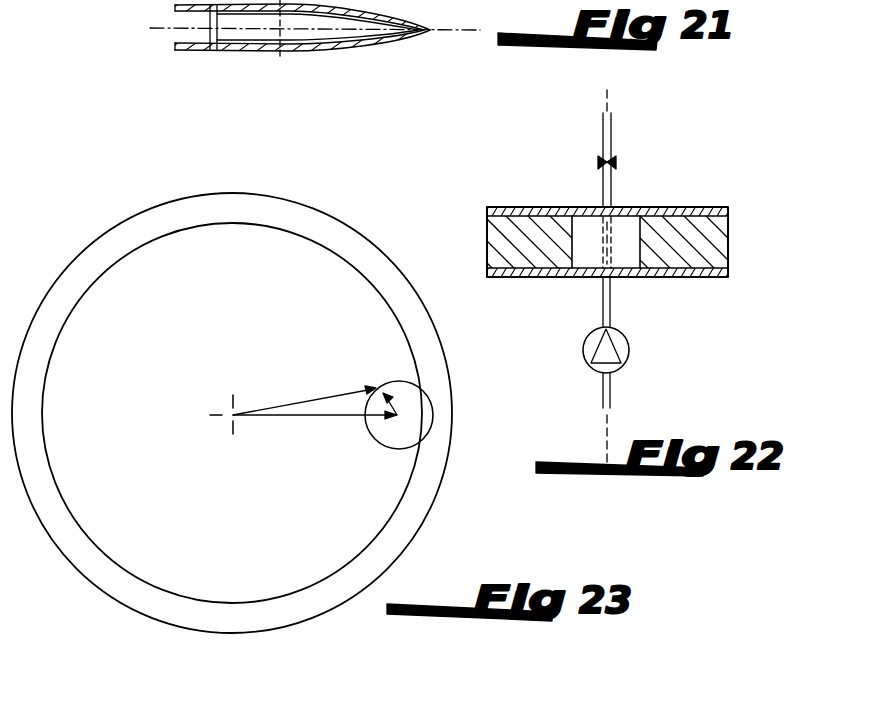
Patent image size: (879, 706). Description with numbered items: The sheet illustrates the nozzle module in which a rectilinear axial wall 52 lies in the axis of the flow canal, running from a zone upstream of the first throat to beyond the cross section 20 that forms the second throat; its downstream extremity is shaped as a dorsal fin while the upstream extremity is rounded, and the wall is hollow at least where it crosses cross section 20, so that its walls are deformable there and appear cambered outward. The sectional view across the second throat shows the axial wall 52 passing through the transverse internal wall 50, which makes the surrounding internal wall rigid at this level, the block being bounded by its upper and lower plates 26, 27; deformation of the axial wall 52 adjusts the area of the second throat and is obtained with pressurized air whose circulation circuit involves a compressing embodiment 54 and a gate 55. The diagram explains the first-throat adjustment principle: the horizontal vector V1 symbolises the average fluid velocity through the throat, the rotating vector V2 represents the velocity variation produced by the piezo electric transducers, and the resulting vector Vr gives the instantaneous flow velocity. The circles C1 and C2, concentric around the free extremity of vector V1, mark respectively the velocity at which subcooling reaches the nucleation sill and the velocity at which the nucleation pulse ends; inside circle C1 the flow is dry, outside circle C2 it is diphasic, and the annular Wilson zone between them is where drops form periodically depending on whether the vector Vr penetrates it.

In FIG. 21, the cross section forming the second throat 20 is at (280, 65).
In FIG. 21, the rectilinear axial wall 52 is at (396, 47).
In FIG. 22, the rectilinear axial wall 52 is at (592, 240).
In FIG. 22, the gate 55 is at (615, 163).
In FIG. 22, the top plate 26 is at (711, 208).
In FIG. 22, the transverse internal wall 50 is at (611, 249).
In FIG. 22, the bottom plate 27 is at (712, 278).
In FIG. 22, the compressing embodiment 54 is at (628, 344).
In FIG. 23, the circle c1 C1 is at (343, 263).
In FIG. 23, the circle c2 C2 is at (357, 230).
In FIG. 23, the horizontal vector v1 V1 is at (300, 418).
In FIG. 23, the rotating vector v2 V2 is at (400, 384).
In FIG. 23, the resulting vector Vr is at (280, 398).